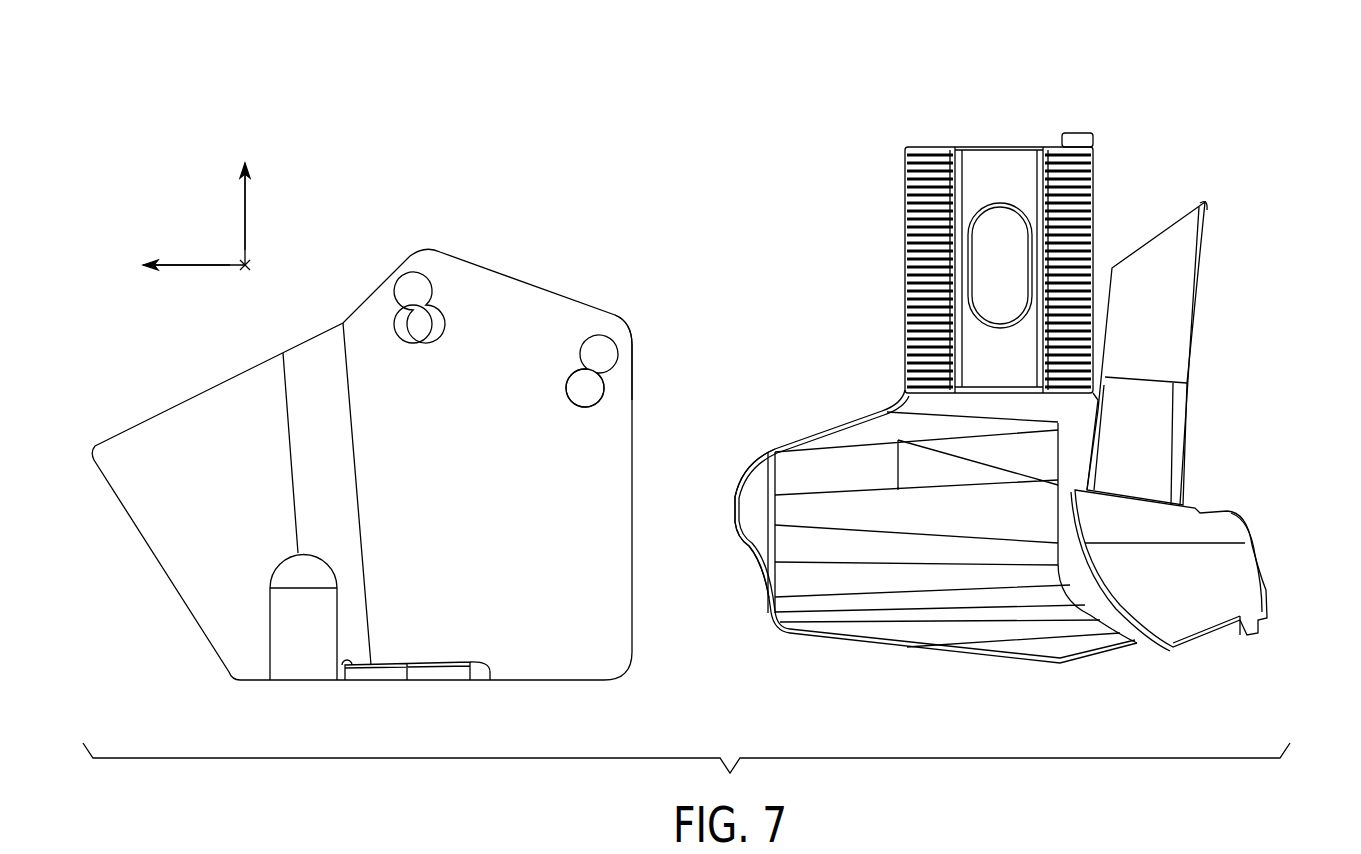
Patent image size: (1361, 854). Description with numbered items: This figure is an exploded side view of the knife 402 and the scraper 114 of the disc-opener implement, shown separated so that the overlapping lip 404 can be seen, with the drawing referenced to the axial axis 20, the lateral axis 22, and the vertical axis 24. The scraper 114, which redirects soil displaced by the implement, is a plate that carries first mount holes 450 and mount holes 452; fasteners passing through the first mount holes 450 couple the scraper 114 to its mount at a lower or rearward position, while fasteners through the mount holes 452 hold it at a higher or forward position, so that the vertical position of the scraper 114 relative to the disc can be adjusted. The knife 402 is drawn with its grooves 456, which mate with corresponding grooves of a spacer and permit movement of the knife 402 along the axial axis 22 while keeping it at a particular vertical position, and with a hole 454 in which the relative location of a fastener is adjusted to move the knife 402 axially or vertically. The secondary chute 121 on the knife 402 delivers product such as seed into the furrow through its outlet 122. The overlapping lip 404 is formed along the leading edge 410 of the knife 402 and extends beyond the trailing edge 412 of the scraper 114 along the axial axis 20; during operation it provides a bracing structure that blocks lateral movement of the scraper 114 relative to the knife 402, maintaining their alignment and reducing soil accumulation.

The axial axis 20 is at (200, 265).
The lateral axis 22 is at (247, 272).
The vertical axis 24 is at (247, 225).
The scraper 114 is at (568, 657).
The secondary chute 121 is at (1195, 298).
The outlet 122 is at (1177, 587).
The knife 402 is at (903, 633).
The overlapping lip 404 is at (750, 485).
The leading edge 410 is at (768, 517).
The trailing edge 412 is at (632, 358).
The first mount holes 450 is at (598, 345).
The mount holes 452 is at (578, 390).
The hole 454 is at (1010, 230).
The grooves 456 is at (1053, 327).